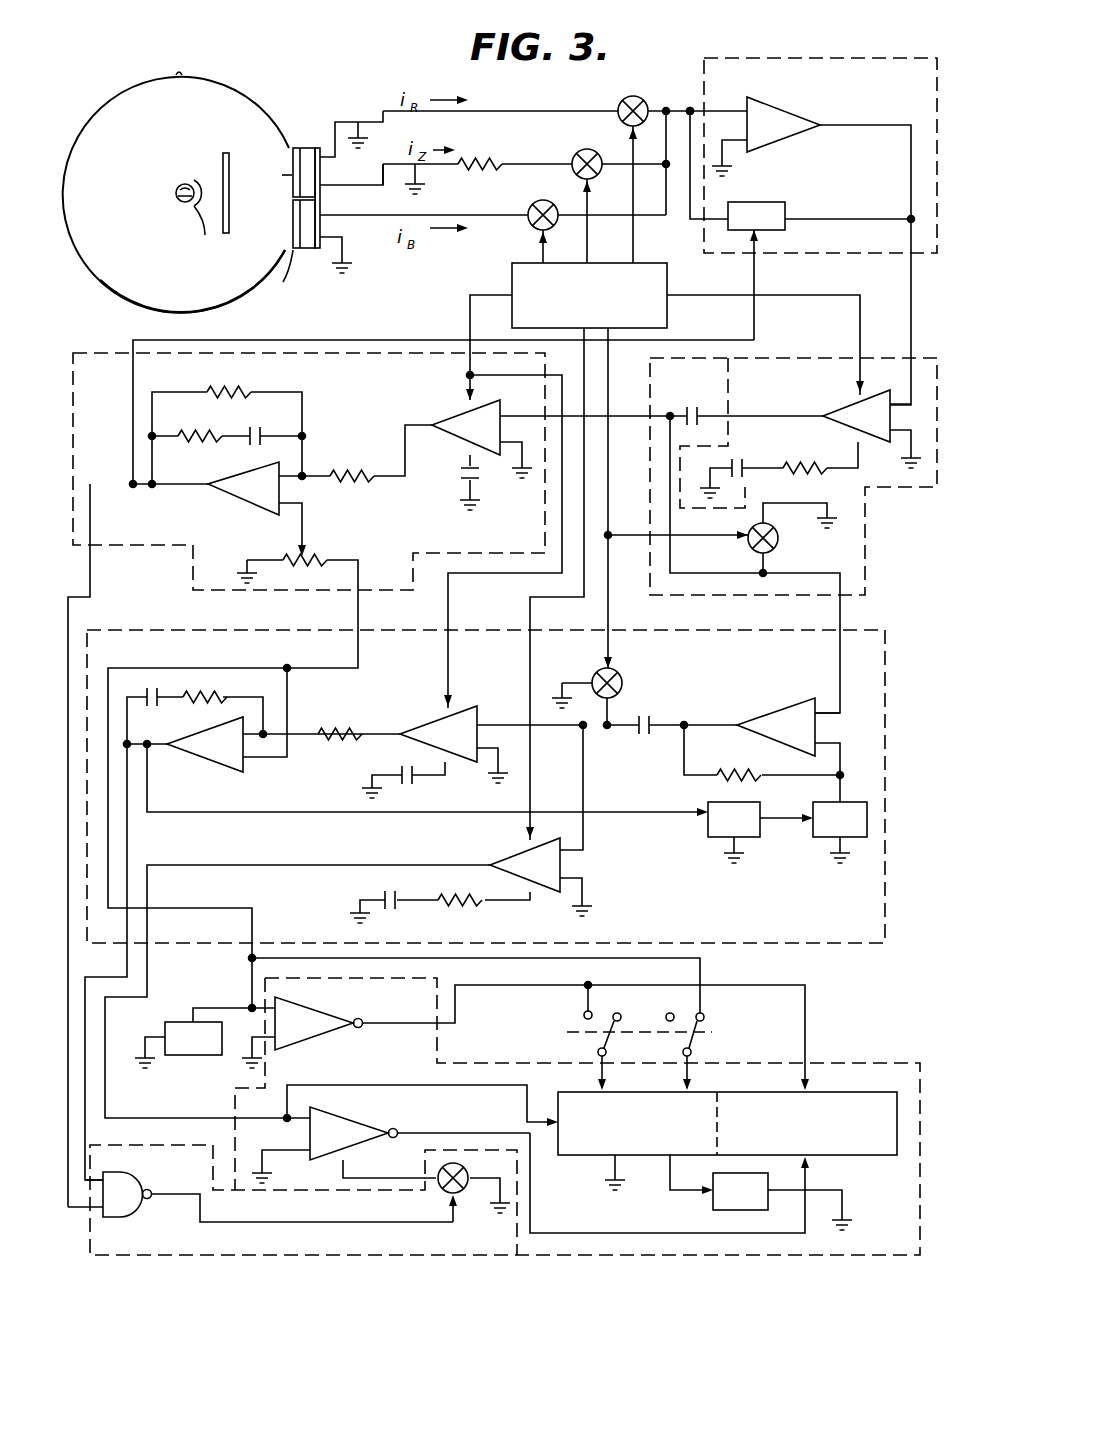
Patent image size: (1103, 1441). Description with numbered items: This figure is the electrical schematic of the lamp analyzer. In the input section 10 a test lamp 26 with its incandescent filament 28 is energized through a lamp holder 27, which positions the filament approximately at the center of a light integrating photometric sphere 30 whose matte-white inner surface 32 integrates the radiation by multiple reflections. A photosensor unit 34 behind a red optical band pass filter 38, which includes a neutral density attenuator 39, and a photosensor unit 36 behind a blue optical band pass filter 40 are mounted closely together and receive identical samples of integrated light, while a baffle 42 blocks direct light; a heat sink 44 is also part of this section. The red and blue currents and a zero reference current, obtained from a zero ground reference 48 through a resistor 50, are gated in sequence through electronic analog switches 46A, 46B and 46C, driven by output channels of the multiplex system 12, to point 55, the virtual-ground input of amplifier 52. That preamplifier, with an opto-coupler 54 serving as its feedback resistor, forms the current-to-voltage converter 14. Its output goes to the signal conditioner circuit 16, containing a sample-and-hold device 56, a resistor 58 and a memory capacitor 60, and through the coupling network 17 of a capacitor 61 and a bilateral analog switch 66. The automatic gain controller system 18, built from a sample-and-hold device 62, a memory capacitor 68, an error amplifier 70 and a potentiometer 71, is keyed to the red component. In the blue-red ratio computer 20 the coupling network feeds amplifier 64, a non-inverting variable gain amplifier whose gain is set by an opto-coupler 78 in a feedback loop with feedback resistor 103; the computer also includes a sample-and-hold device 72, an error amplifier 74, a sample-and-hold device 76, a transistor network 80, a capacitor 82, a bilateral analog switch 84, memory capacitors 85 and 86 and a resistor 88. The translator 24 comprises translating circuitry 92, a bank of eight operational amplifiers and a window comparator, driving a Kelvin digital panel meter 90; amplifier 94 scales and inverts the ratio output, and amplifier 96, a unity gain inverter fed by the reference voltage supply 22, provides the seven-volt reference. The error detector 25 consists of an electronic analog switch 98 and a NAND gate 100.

The input section 10 is at (173, 167).
The light integrating photometric sphere 30 is at (112, 295).
The matte-white inner surface 32 is at (178, 74).
The lamp 26 is at (178, 185).
The incandescent filament 28 is at (178, 196).
The lamp holder 27 is at (205, 235).
The baffle 42 is at (222, 162).
The red optical band pass filter 38 is at (295, 186).
The photosensor unit 34 is at (306, 140).
The photosensor unit 36 is at (306, 258).
The blue optical band pass filter 40 is at (280, 280).
The neutral density attenuator 39 is at (292, 170).
The heat sink 44 is at (328, 120).
The zero ground reference 48 is at (383, 180).
The resistor 50 is at (485, 160).
The electronic analog switch 46A is at (530, 205).
The electronic analog switch 46B is at (578, 152).
The electronic analog switch 46C is at (620, 100).
The point 55 is at (690, 108).
The multiplex system 12 is at (667, 273).
The current-to-voltage converter 14 is at (870, 182).
The amplifier 52 is at (790, 112).
The opto-coupler 54 is at (770, 205).
The automatic gain controller system 18 is at (372, 352).
The amplifier 70 is at (215, 495).
The potentiometer 71 is at (330, 556).
The sample-and-hold device 62 is at (527, 446).
The capacitor 68 is at (480, 480).
The coupling network 17 is at (860, 548).
The signal conditioner circuit 16 is at (890, 356).
The sample-and-hold device 56 is at (850, 405).
The capacitor 61 is at (695, 405).
The resistor 58 is at (808, 460).
The capacitor 60 is at (740, 458).
The bilateral electronic analog switch 66 is at (775, 548).
The blue-red ratio computer 20 is at (185, 628).
The amplifier 74 is at (212, 752).
The sample-and-hold device 72 is at (472, 744).
The capacitor 85 is at (418, 785).
The bilateral electronic analog switch 84 is at (622, 678).
The capacitor 82 is at (635, 738).
The amplifier 64 is at (764, 731).
The feedback resistor 103 is at (730, 768).
The transistor network 80 is at (712, 833).
The opto-coupler 78 is at (822, 830).
The sample-and-hold device 76 is at (464, 887).
The resistor 88 is at (466, 908).
The capacitor 86 is at (372, 892).
The reference voltage supply 22 is at (185, 1058).
The amplifier 96 is at (312, 1028).
The translator 24 is at (860, 1060).
The translating circuitry 92 is at (870, 1160).
The Kelvin digital panel meter 90 is at (735, 1215).
The amplifier 94 is at (358, 1120).
The electronic analog switch 98 is at (465, 1195).
The NAND gate 100 is at (130, 1212).
The error detector 25 is at (258, 1257).